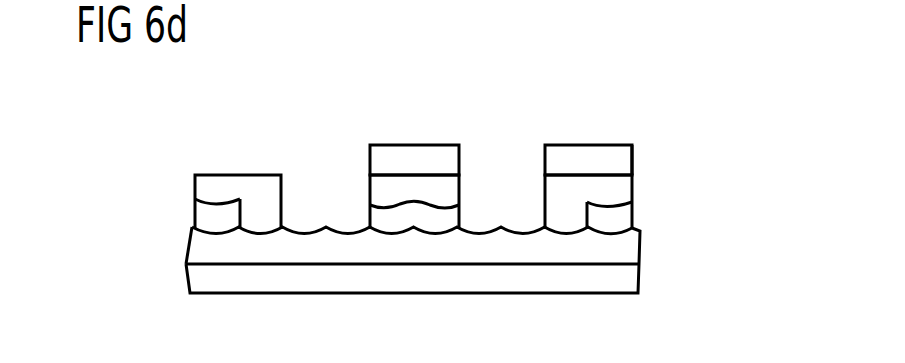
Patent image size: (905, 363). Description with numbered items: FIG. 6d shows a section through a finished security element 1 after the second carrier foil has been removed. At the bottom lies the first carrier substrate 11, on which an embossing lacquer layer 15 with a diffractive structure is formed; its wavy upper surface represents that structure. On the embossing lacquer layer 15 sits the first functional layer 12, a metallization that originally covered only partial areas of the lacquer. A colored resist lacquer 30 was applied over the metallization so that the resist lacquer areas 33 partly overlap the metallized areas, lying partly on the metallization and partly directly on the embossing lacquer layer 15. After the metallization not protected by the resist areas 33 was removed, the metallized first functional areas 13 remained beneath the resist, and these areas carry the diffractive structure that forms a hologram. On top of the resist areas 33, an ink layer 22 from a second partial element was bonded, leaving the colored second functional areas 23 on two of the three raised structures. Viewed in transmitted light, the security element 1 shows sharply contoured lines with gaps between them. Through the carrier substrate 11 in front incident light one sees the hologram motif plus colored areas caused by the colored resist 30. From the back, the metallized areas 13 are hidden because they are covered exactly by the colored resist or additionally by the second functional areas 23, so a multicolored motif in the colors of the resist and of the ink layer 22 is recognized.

The security element 1 is at (220, 136).
The first carrier substrate 11 is at (628, 278).
The first functional layer 12 is at (650, 218).
The first functional areas 13 is at (203, 220).
The embossing lacquer layer 15 is at (630, 250).
The ink layer 22 is at (650, 146).
The second functional areas 23 is at (382, 158).
The colored resist lacquer 30 is at (650, 181).
The resist lacquer areas 33 is at (203, 190).